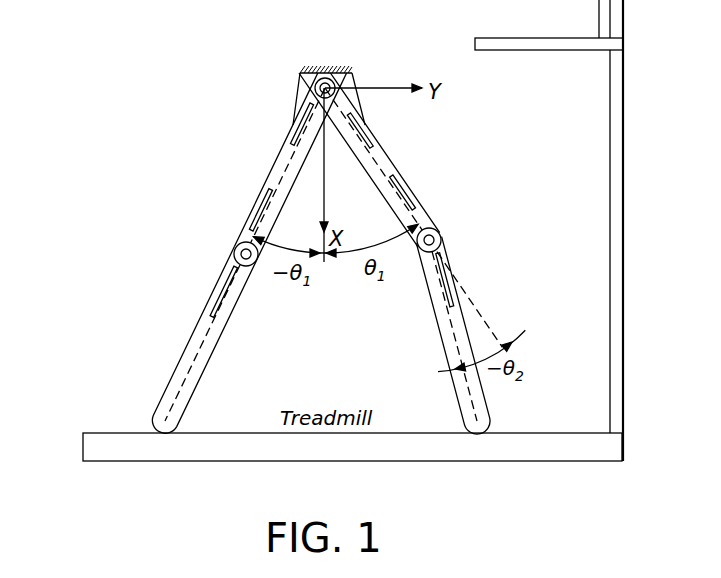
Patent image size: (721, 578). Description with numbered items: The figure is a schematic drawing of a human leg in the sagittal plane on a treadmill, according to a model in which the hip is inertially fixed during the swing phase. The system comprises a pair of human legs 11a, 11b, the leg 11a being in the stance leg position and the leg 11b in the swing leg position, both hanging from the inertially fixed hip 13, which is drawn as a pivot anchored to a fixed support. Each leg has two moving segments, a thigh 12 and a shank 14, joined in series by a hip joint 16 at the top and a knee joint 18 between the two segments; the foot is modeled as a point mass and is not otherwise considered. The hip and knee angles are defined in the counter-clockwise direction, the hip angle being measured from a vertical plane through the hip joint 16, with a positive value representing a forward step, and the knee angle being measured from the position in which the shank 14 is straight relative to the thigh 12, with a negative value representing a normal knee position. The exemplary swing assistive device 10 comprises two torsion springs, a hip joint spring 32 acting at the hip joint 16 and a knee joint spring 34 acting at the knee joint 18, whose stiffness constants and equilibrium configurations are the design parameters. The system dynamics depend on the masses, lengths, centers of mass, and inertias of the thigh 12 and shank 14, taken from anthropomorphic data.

The swing assistive device 10 is at (155, 140).
The human leg in stance leg position 11a is at (137, 403).
The human leg in swing leg position 11b is at (500, 410).
The thigh 12 is at (283, 150).
The inertially fixed hip 13 is at (314, 78).
The shank 14 is at (184, 372).
The hip joint 16 is at (343, 68).
The knee joint 18 is at (234, 254).
The hip joint spring 32 is at (300, 124).
The knee joint spring 34 is at (253, 234).